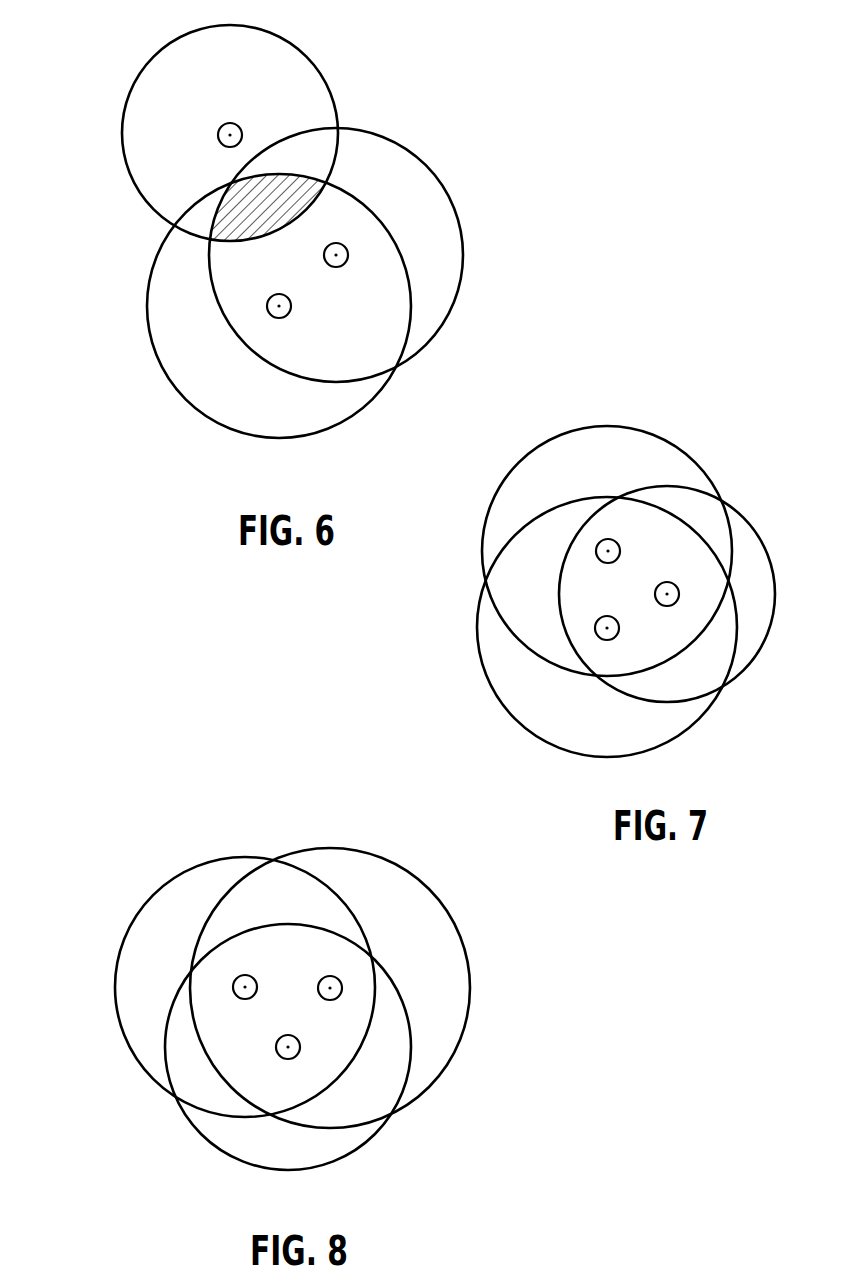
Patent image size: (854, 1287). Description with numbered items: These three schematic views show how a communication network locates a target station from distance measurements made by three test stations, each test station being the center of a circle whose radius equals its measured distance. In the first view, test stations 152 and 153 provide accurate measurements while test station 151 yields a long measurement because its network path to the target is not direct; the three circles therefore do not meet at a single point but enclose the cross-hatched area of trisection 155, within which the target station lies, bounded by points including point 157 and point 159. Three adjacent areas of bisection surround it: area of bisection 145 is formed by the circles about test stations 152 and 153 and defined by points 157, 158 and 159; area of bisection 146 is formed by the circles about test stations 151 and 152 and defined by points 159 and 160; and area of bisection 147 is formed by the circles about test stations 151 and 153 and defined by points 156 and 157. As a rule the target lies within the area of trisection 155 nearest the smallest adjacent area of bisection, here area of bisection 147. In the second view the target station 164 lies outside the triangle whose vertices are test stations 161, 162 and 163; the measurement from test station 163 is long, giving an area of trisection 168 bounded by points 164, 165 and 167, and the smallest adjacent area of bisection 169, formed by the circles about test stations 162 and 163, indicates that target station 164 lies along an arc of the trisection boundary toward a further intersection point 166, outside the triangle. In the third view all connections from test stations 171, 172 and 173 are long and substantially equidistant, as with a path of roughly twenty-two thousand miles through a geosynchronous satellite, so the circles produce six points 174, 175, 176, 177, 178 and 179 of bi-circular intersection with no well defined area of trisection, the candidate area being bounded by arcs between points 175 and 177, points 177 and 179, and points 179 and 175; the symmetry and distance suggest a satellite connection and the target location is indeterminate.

In FIG. 6, the area of bisection 145 is at (320, 158).
In FIG. 6, the area of bisection 146 is at (325, 363).
In FIG. 6, the area of bisection 147 is at (202, 222).
In FIG. 6, the test station 151 is at (292, 311).
In FIG. 6, the test station 152 is at (349, 256).
In FIG. 6, the test station 153 is at (237, 124).
In FIG. 6, the area of trisection 155 is at (263, 202).
In FIG. 6, the point 156 is at (172, 229).
In FIG. 6, the point 157 is at (232, 182).
In FIG. 6, the point 158 is at (340, 124).
In FIG. 6, the point 159 is at (332, 185).
In FIG. 6, the point 160 is at (398, 368).
In FIG. 7, the test station 161 is at (596, 632).
In FIG. 7, the test station 162 is at (670, 606).
In FIG. 7, the test station 163 is at (600, 541).
In FIG. 7, the target station 164 is at (617, 497).
In FIG. 7, the point 165 is at (595, 678).
In FIG. 7, the intersection point 166 is at (730, 685).
In FIG. 7, the point 167 is at (733, 583).
In FIG. 7, the area of trisection 168 is at (645, 520).
In FIG. 7, the area of bisection 169 is at (710, 518).
In FIG. 8, the test station 171 is at (301, 1048).
In FIG. 8, the test station 172 is at (342, 990).
In FIG. 8, the test station 173 is at (233, 987).
In FIG. 8, the point of bi-circular intersection 174 is at (173, 1098).
In FIG. 8, the point of bi-circular intersection 175 is at (273, 1113).
In FIG. 8, the point of bi-circular intersection 176 is at (398, 1112).
In FIG. 8, the point of bi-circular intersection 177 is at (375, 953).
In FIG. 8, the point of bi-circular intersection 178 is at (278, 859).
In FIG. 8, the point of bi-circular intersection 179 is at (192, 968).